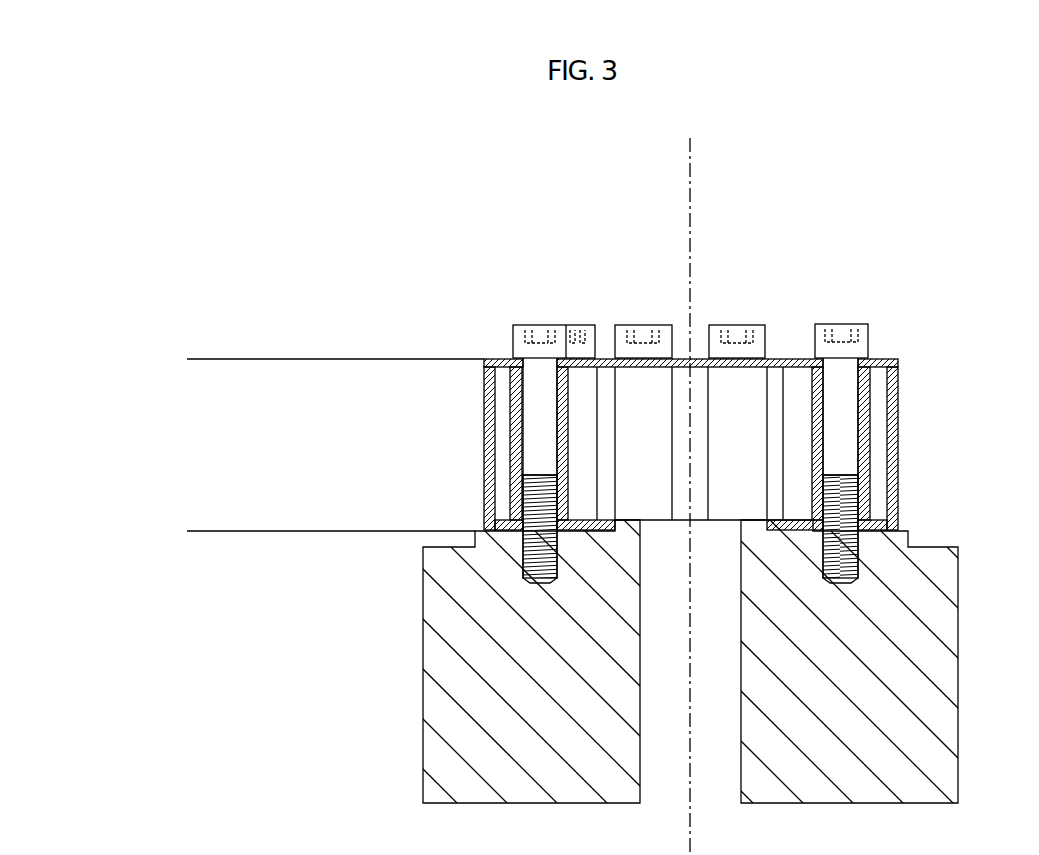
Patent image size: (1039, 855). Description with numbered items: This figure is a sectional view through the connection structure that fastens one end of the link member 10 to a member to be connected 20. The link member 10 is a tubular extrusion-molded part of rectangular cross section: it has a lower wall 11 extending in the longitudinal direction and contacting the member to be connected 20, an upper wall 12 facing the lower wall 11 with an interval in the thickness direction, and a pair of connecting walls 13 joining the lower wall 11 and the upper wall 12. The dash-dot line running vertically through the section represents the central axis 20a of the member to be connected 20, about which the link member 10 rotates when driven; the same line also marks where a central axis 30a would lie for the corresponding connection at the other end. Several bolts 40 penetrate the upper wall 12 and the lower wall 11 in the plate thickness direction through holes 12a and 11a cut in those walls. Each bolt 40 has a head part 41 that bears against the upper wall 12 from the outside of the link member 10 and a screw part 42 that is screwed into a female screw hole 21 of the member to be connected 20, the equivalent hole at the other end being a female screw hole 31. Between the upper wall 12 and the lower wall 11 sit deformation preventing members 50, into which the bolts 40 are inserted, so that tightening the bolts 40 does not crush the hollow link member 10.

The link member 10 is at (318, 340).
The lower wall 11 is at (572, 540).
The hole 11a is at (527, 530).
The upper wall 12 is at (791, 358).
The hole 12a is at (533, 359).
The connecting walls 13 is at (484, 440).
The member to be connected 20 is at (908, 533).
The central axis 20a is at (785, 496).
The central axis 30a is at (690, 175).
The female screw hole 21 is at (682, 665).
The female screw hole 31 is at (550, 586).
The bolt 40 is at (691, 431).
The head part 41 is at (512, 338).
The screw part 42 is at (522, 577).
The deformation preventing member 50 is at (510, 395).